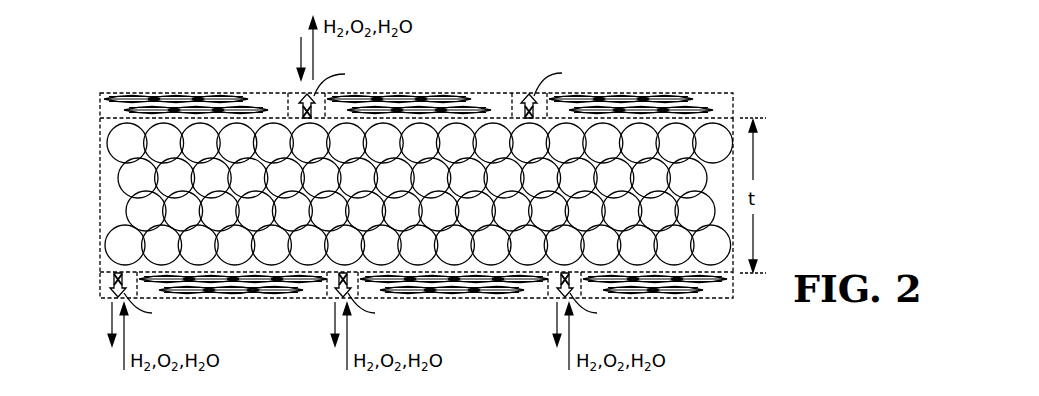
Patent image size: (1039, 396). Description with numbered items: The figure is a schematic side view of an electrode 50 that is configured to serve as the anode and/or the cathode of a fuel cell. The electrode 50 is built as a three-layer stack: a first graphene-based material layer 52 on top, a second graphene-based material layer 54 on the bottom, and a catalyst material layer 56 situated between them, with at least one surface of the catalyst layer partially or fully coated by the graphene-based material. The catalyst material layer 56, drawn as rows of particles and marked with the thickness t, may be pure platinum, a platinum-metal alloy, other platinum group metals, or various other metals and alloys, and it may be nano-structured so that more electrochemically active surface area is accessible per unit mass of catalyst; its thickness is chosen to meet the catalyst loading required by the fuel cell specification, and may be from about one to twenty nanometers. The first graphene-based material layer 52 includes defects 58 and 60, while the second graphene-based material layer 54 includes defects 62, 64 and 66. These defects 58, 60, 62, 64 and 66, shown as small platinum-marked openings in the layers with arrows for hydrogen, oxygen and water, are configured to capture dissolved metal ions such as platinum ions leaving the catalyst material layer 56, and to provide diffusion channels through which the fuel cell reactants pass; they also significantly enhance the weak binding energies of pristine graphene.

The electrode 50 is at (60, 279).
The first graphene-based material layer 52 is at (110, 92).
The second graphene-based material layer 54 is at (239, 298).
The catalyst material layer 56 is at (120, 178).
The defect 58 is at (300, 92).
The defect 60 is at (522, 92).
The defect 62 is at (108, 300).
The defect 64 is at (330, 300).
The defect 66 is at (553, 300).